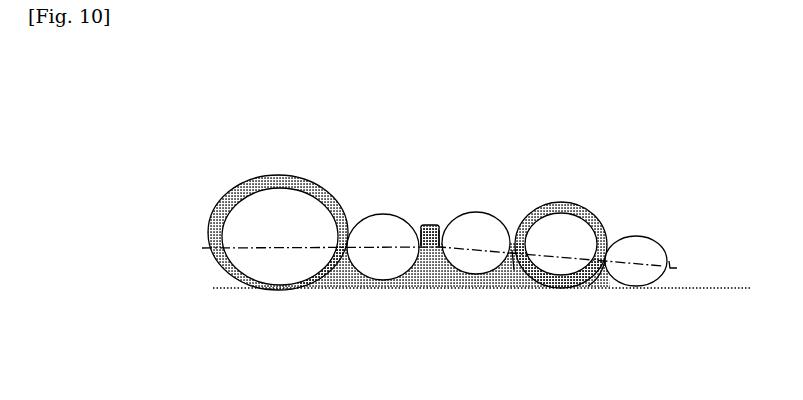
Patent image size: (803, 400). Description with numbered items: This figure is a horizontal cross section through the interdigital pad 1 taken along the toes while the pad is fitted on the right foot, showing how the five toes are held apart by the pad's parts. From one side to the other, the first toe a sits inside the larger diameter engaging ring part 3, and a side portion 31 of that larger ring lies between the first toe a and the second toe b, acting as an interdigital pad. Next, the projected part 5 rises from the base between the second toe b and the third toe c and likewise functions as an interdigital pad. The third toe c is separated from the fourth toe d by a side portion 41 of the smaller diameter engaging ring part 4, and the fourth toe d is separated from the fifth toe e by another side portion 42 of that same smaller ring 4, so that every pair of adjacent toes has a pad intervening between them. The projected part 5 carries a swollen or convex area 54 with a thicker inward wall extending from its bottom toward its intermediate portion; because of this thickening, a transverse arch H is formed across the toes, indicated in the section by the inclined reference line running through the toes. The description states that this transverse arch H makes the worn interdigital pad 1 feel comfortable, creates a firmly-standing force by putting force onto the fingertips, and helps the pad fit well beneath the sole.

The interdigital pad 1 is at (301, 165).
The larger diameter engaging ring part 3 is at (222, 203).
The smaller diameter engaging ring part 4 is at (592, 208).
The projected part 5 is at (439, 225).
The swollen or convex area 54 is at (409, 250).
The side portion of the larger diameter engaging ring part 31 is at (321, 284).
The side portion of the smaller diameter engaging ring part 41 is at (523, 286).
The another side portion of the smaller diameter engaging ring part 42 is at (587, 286).
The transverse arch H is at (674, 262).
The first toe a is at (272, 224).
The second toe b is at (381, 241).
The third toe c is at (474, 244).
The fourth toe d is at (552, 248).
The fifth toe e is at (631, 260).